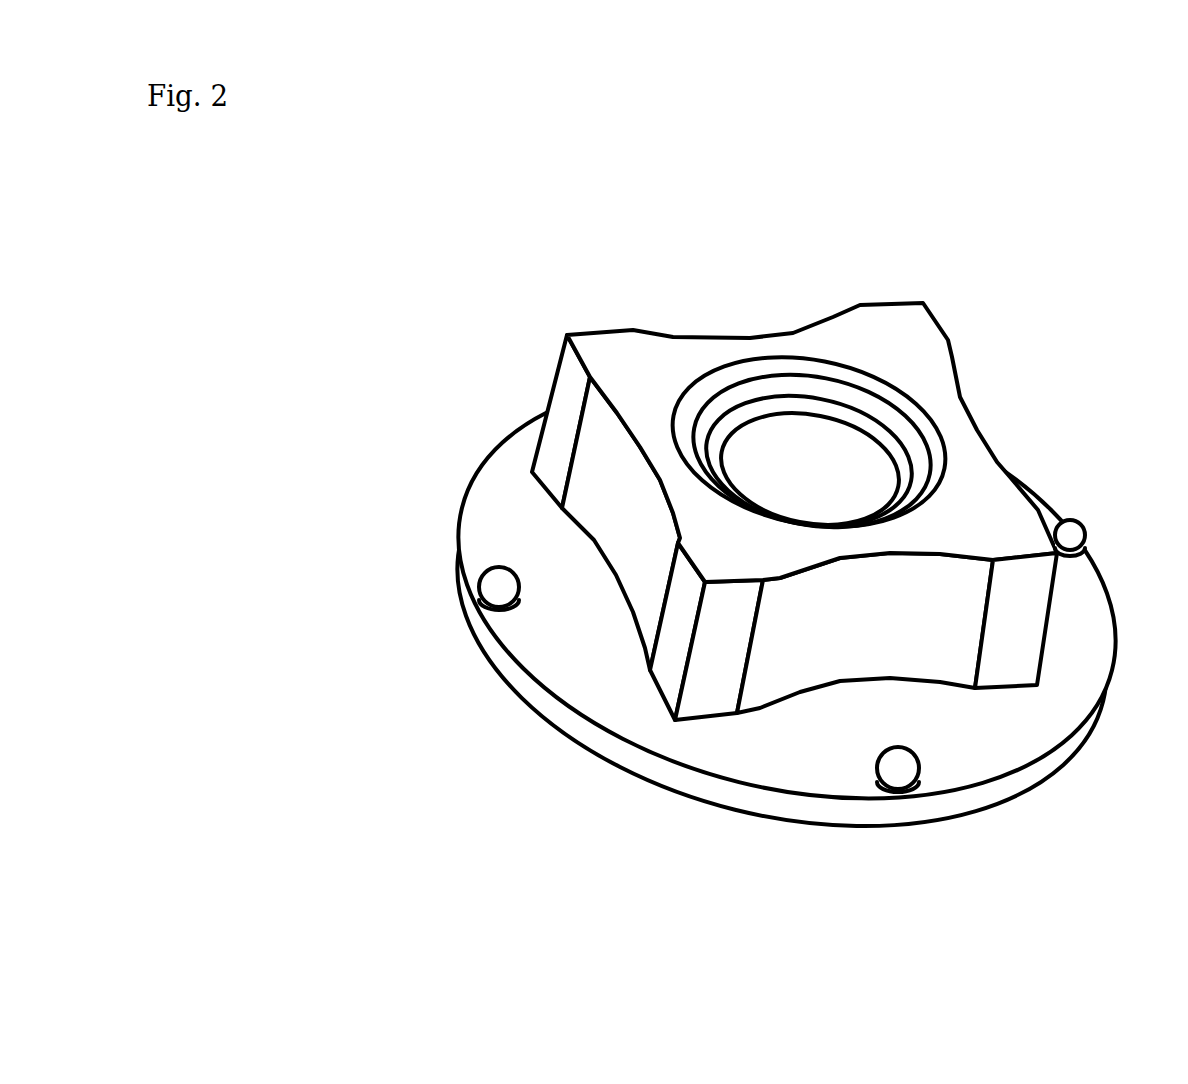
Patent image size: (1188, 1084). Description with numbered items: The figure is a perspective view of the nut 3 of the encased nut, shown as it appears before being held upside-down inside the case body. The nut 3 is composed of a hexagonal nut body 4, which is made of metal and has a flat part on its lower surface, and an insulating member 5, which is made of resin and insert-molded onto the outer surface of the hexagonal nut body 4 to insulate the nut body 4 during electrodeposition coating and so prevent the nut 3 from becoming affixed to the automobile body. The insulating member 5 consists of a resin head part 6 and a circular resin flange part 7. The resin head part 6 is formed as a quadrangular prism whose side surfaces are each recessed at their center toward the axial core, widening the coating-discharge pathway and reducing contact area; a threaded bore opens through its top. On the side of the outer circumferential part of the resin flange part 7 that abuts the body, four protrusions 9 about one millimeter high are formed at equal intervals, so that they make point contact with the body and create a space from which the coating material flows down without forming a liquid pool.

The nut 3 is at (759, 558).
The hexagonal nut body 4 is at (809, 368).
The insulating member 5 is at (852, 454).
The resin head part 6 is at (1073, 625).
The resin flange part 7 is at (787, 602).
The protrusions 9 is at (755, 675).